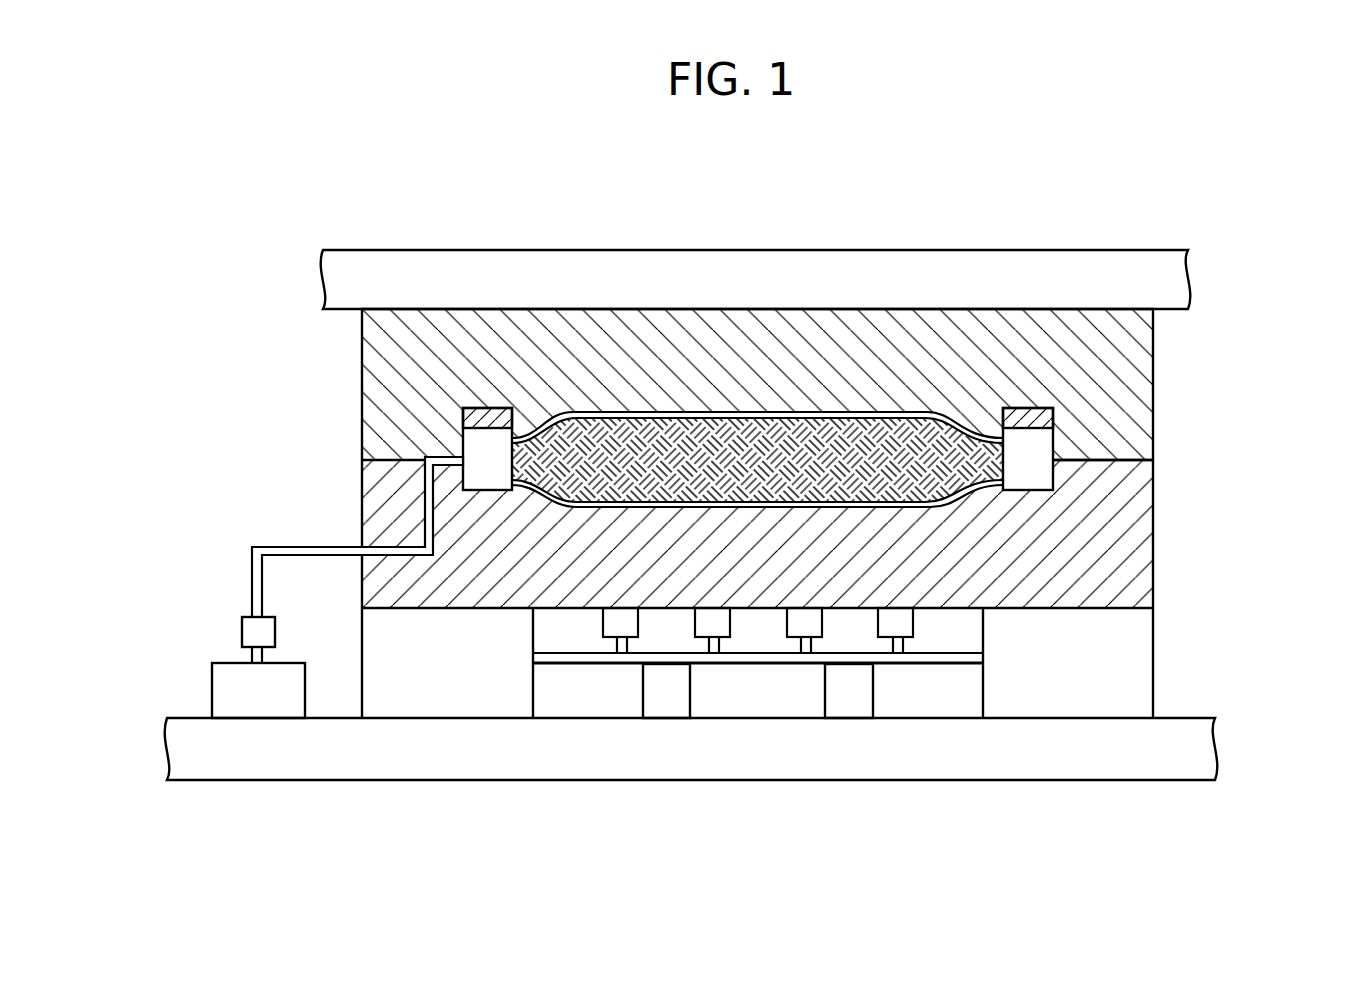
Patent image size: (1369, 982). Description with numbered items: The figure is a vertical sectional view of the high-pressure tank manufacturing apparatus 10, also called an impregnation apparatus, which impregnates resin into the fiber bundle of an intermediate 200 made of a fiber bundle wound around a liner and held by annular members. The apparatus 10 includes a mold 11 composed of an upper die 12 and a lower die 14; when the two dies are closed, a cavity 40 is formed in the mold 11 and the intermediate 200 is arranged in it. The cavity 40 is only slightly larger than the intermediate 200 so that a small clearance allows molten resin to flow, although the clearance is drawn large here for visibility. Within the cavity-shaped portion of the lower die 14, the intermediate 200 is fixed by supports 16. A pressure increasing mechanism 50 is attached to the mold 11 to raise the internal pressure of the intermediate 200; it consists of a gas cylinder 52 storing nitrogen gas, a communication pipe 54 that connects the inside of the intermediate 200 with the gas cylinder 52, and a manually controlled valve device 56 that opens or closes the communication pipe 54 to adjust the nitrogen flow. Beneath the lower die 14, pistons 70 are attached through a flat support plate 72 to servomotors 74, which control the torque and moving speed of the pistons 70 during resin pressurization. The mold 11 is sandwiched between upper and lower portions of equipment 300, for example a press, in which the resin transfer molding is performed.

The high-pressure tank manufacturing apparatus 10 is at (1123, 198).
The mold 11 is at (823, 513).
The upper die 12 is at (1135, 403).
The lower die 14 is at (797, 589).
The support 16 is at (492, 420).
The cavity 40 is at (938, 448).
The pressure increasing mechanism 50 is at (300, 585).
The gas cylinder 52 is at (212, 690).
The communication pipe 54 is at (305, 540).
The valve device 56 is at (241, 632).
The piston 70 is at (612, 630).
The support plate 72 is at (965, 657).
The servomotor 74 is at (670, 705).
The intermediate 200 is at (927, 497).
The equipment 300 is at (1157, 281).